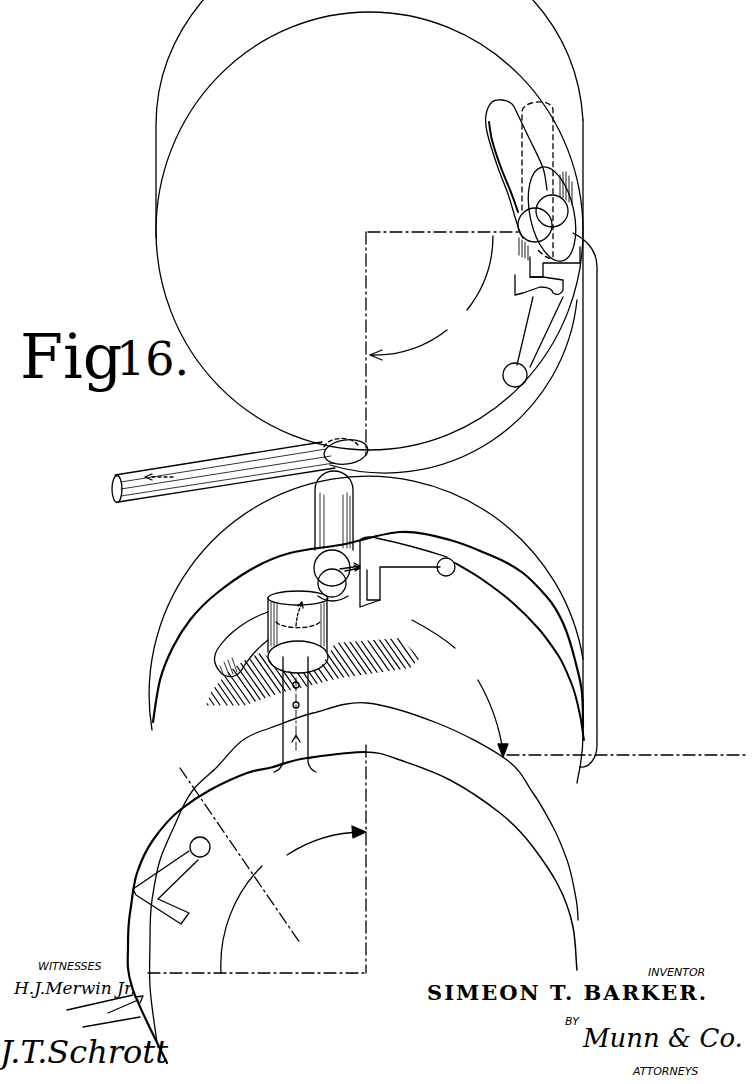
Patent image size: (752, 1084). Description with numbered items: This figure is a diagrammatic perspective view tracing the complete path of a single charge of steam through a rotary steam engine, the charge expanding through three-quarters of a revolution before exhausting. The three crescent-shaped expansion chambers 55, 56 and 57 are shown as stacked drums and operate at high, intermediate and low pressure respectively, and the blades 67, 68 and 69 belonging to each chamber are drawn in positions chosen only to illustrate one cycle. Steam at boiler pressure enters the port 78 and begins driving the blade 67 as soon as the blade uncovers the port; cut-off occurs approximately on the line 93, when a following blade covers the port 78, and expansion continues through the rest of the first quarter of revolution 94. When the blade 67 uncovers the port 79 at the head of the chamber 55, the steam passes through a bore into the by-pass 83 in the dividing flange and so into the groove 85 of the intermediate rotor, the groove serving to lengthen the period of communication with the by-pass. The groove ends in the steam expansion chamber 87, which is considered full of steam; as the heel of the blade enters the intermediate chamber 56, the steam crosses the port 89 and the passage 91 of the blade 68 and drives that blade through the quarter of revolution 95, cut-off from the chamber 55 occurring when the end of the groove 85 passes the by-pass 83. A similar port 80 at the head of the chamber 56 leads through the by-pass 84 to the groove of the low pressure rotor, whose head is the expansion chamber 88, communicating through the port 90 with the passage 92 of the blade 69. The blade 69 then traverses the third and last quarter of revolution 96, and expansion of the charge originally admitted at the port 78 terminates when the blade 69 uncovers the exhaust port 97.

The high pressure expansion chamber 55 is at (153, 840).
The intermediate expansion chamber 56 is at (520, 568).
The low pressure expansion chamber 57 is at (540, 400).
The blade 67 is at (152, 892).
The blade 68 is at (404, 550).
The blade 69 is at (557, 320).
The port 78 is at (113, 1025).
The port 79 is at (250, 716).
The port 80 is at (598, 497).
The by-pass 83 is at (228, 638).
The by-pass 84 is at (568, 188).
The groove 85 is at (230, 623).
The steam expansion chamber 87 is at (316, 511).
The steam expansion chamber 88 is at (557, 143).
The port 89 is at (380, 608).
The port 90 is at (543, 270).
The passage 91 is at (352, 582).
The passage 92 is at (563, 287).
The line 93 is at (187, 775).
The first quarter of revolution 94 is at (293, 899).
The quarter of revolution 95 is at (460, 688).
The third and last quarter of revolution 96 is at (431, 298).
The exhaust port 97 is at (182, 463).